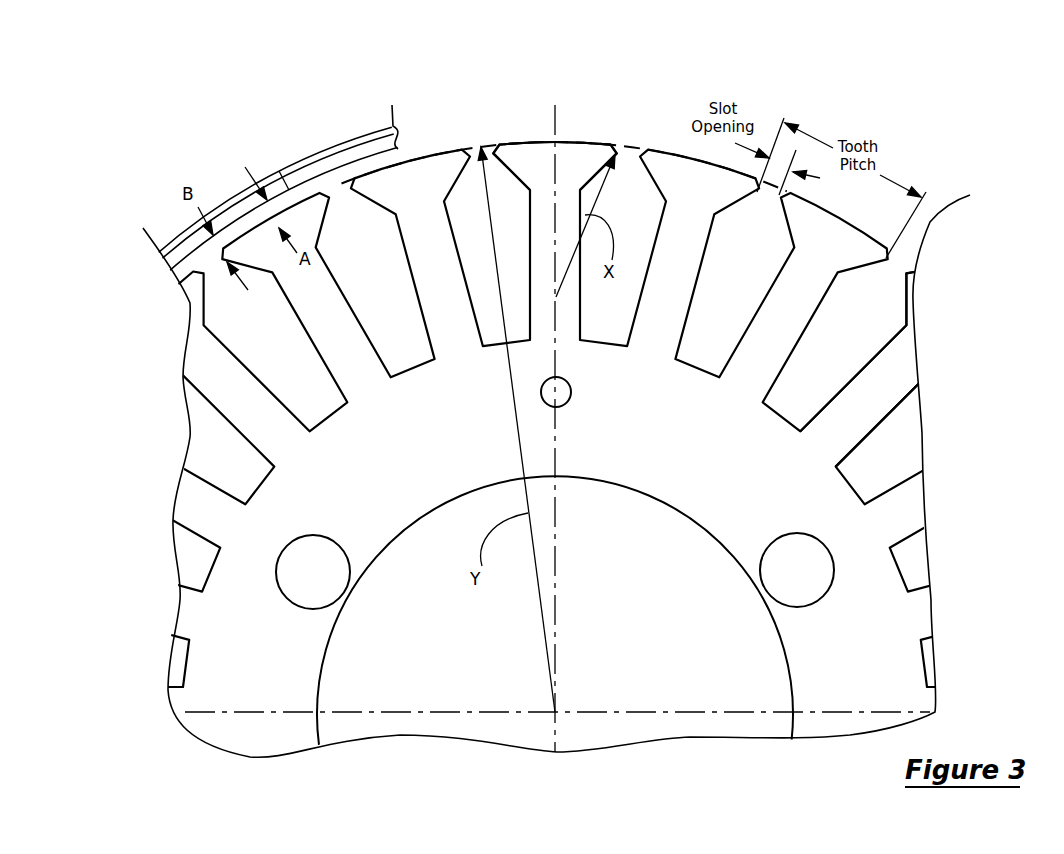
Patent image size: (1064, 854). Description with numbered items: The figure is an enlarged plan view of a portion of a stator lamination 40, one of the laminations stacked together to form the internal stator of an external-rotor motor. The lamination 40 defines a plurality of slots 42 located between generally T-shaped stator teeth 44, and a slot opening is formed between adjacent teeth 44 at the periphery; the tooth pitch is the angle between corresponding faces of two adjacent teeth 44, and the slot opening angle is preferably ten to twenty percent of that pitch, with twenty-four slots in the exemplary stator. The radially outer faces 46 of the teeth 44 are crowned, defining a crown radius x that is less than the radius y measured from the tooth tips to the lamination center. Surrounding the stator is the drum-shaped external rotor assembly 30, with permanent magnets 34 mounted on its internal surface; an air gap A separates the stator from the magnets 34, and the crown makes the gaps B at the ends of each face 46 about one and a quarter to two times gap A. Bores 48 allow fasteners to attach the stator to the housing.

The external rotor assembly 30 is at (323, 148).
The permanent magnets 34 is at (313, 173).
The stator lamination 40 is at (970, 148).
The slots 42 is at (860, 337).
The stator teeth 44 is at (533, 167).
The radially outer faces 46 is at (677, 152).
The bores 48 is at (566, 403).